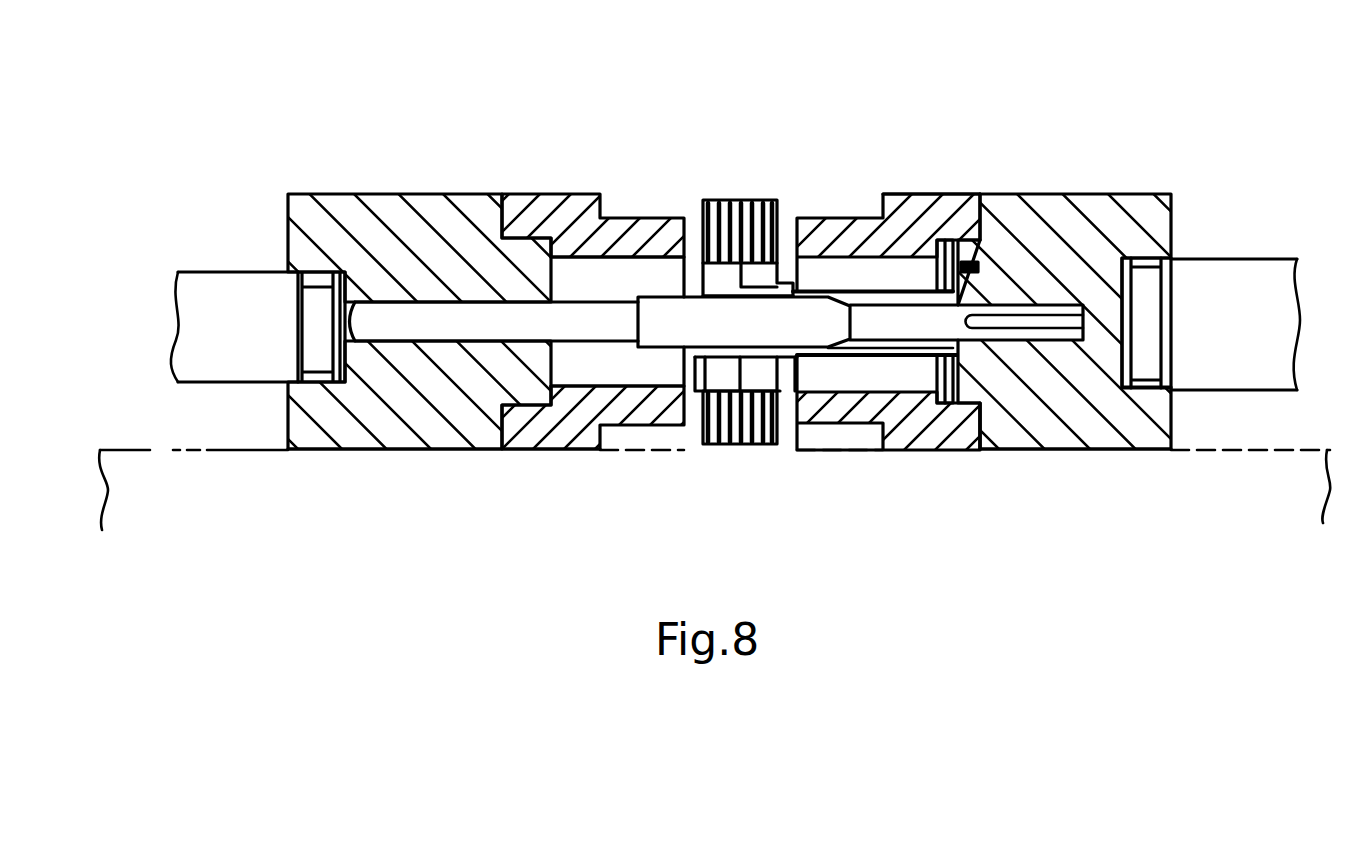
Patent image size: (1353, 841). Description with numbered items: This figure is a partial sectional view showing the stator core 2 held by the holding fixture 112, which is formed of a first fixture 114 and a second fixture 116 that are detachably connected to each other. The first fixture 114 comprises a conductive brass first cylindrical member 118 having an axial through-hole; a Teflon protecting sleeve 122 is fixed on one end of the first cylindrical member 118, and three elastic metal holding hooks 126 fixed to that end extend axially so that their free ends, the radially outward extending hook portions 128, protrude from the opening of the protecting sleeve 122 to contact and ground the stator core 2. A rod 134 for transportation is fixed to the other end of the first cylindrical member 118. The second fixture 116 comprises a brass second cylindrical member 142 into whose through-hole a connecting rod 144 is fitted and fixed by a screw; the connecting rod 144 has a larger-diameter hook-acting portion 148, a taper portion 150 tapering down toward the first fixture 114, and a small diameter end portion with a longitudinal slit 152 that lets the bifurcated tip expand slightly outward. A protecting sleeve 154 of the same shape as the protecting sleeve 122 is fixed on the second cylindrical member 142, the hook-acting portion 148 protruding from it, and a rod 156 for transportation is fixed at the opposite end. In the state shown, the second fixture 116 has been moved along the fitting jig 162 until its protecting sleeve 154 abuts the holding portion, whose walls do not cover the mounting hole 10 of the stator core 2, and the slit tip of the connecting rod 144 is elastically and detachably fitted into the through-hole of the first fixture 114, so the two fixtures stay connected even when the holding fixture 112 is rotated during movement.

The stator core 2 is at (734, 190).
The mounting hole 10 is at (716, 275).
The holding fixture 112 is at (899, 178).
The first fixture 114 is at (1058, 458).
The second fixture 116 is at (407, 457).
The first cylindrical member 118 is at (1077, 233).
The protecting sleeve 122 is at (832, 227).
The holding hooks 126 is at (845, 362).
The hook portion 128 is at (696, 362).
The rod for transportation 134 is at (1220, 287).
The second cylindrical member 142 is at (352, 224).
The connecting rod 144 is at (592, 296).
The hook-acting portion 148 is at (688, 317).
The taper portion 150 is at (842, 318).
The slit 152 is at (990, 330).
The protecting sleeve 154 is at (527, 216).
The rod for transportation 156 is at (221, 297).
The fitting jig 162 is at (153, 448).